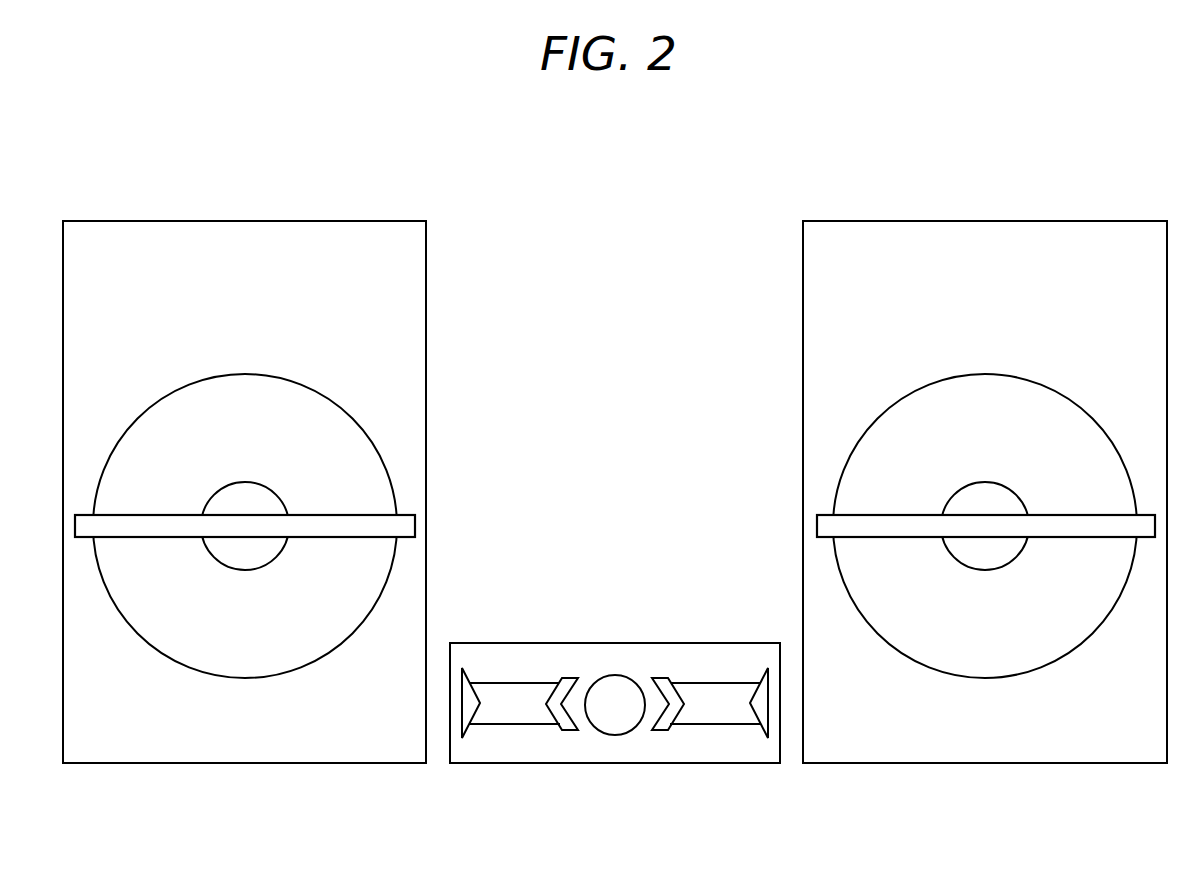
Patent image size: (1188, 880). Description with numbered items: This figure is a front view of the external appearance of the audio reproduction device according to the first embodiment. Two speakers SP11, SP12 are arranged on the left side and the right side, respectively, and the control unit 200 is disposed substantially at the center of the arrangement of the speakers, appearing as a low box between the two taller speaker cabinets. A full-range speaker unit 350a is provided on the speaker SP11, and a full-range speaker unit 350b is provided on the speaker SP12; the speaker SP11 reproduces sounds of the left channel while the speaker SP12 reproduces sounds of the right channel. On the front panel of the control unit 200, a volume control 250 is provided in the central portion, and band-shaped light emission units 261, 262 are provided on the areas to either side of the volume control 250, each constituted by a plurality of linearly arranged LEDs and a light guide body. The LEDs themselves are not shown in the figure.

The speaker SP11 is at (167, 220).
The speaker SP12 is at (901, 220).
The full-range speaker unit 350a is at (319, 393).
The full-range speaker unit 350b is at (911, 393).
The control unit 200 is at (555, 643).
The volume control 250 is at (622, 690).
The band-shaped light emission unit 261 is at (738, 690).
The band-shaped light emission unit 262 is at (483, 690).